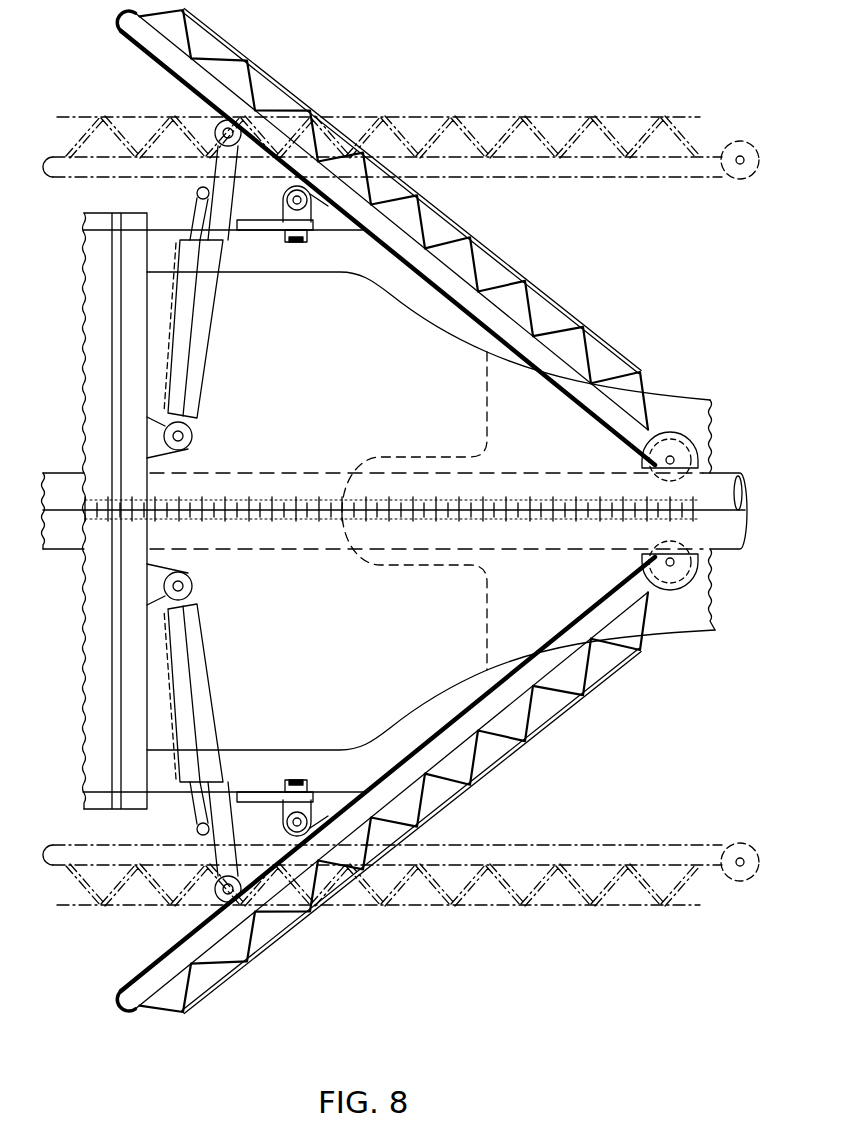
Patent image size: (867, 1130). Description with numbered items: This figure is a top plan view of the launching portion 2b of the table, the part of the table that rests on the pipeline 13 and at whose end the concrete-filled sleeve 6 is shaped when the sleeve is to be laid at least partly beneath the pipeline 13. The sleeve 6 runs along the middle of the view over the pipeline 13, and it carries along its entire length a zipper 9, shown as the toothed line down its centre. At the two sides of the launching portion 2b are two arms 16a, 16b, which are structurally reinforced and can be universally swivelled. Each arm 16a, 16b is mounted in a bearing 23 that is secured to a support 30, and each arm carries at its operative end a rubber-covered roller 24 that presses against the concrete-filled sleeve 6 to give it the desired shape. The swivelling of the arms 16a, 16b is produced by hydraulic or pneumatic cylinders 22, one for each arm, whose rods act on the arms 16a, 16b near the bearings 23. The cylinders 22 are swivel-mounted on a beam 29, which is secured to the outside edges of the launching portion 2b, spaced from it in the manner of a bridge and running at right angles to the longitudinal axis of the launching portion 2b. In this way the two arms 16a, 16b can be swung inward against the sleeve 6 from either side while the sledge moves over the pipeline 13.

The launching portion 2b is at (368, 270).
The sleeve 6 is at (346, 628).
The zipper 9 is at (277, 522).
The pipeline 13 is at (63, 496).
The arm 16a is at (510, 692).
The arm 16b is at (535, 350).
The hydraulic or pneumatic cylinder 22 is at (195, 353).
The bearing 23 is at (320, 207).
The rubber-covered roller 24 is at (680, 432).
The beam 29 is at (130, 352).
The support 30 is at (260, 230).